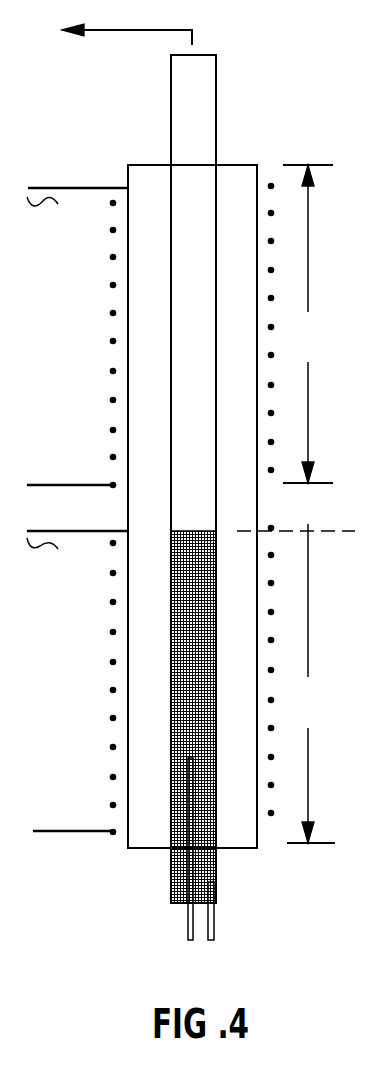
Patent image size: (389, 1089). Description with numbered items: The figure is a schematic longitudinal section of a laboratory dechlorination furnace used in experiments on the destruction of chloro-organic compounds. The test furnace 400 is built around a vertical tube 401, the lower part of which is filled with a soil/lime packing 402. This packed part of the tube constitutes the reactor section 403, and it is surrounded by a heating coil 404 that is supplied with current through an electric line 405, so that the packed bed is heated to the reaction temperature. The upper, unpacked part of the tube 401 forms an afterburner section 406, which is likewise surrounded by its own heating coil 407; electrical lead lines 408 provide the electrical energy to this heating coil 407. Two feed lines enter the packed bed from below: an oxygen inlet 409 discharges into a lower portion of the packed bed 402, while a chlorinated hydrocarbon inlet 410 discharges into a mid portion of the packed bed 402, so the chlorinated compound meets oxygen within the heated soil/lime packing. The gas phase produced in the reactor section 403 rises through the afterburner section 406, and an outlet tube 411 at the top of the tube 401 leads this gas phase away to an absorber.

The test furnace 400 is at (176, 582).
The tube 401 is at (180, 348).
The soil/lime packing 402 is at (175, 652).
The reactor section 403 is at (296, 683).
The heating coil 404 is at (113, 690).
The electric line 405 is at (80, 531).
The afterburner section 406 is at (309, 324).
The heating coil 407 is at (113, 230).
The electrical lead lines 408 is at (92, 188).
The oxygen inlet 409 is at (214, 930).
The chlorinated hydrocarbon inlet 410 is at (188, 932).
The outlet tube 411 is at (192, 44).